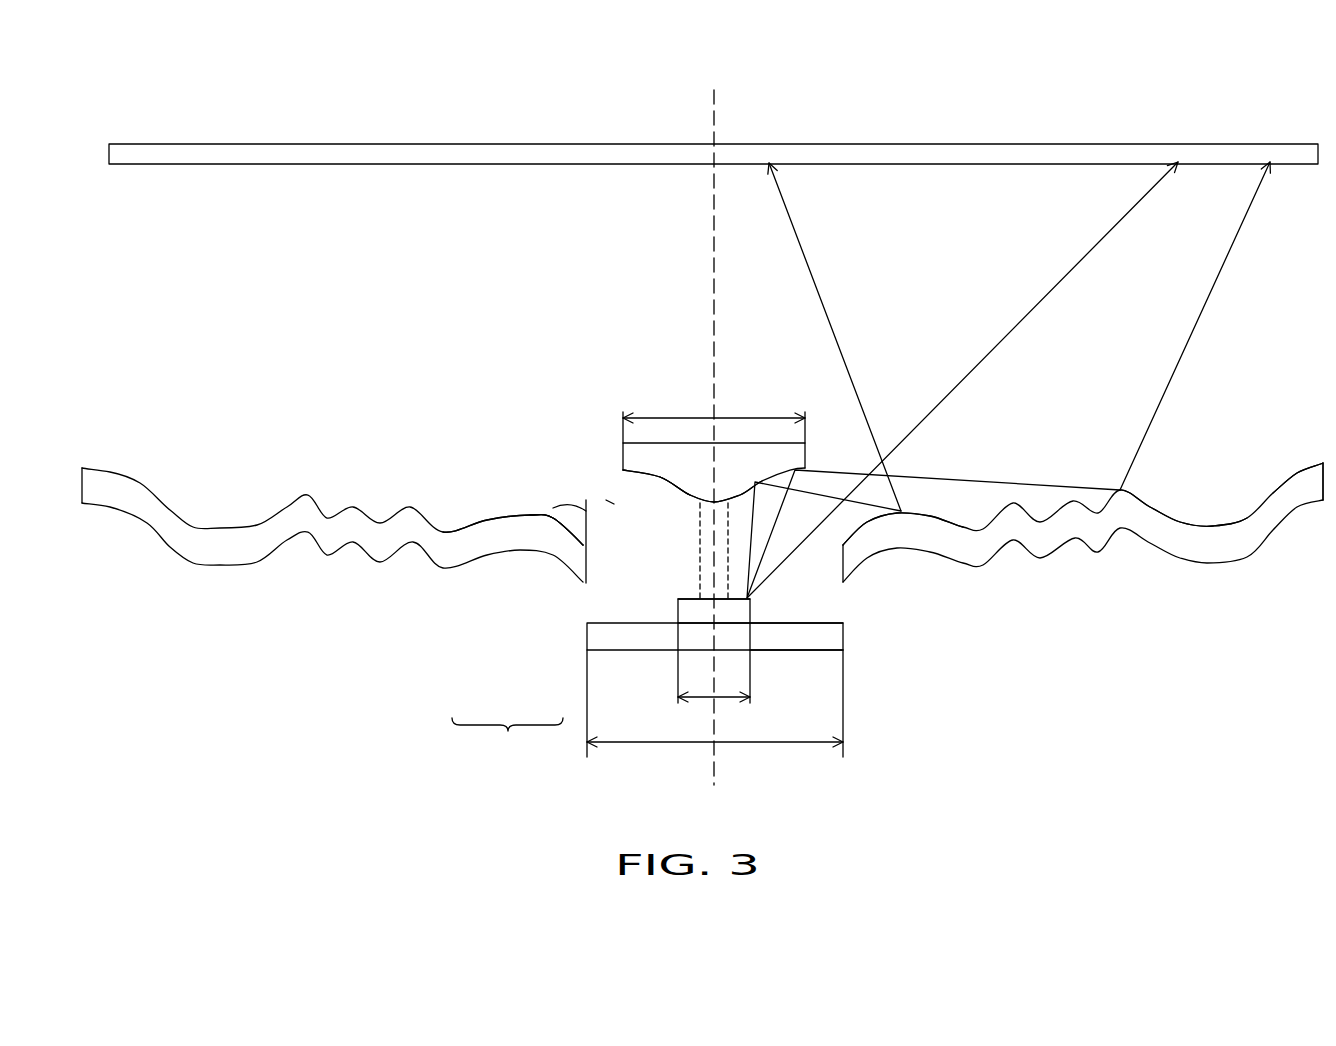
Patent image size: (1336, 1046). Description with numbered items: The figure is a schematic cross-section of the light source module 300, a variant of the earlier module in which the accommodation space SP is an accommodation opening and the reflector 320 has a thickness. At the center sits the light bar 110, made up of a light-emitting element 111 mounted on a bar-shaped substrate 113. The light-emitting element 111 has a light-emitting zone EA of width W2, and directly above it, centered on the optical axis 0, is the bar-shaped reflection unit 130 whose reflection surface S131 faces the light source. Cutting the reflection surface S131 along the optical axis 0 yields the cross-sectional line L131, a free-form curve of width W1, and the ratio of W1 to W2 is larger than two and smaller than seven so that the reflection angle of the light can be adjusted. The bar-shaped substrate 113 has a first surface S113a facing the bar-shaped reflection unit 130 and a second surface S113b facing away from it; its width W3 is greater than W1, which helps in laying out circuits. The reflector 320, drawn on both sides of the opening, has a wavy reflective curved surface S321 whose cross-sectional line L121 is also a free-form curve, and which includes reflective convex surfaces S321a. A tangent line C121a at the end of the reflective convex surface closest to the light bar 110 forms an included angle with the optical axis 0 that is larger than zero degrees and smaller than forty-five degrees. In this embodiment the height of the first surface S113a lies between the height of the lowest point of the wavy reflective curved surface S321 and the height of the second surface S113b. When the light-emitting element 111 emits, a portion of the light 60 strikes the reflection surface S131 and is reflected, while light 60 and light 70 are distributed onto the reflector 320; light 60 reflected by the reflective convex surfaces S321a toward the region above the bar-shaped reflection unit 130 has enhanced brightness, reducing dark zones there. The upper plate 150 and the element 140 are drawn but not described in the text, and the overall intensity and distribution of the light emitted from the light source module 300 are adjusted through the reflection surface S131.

The light guide plate / diffusion plate 150 is at (205, 152).
The optical axis 0 is at (713, 110).
The light 60 is at (811, 276).
The light 70 is at (1072, 268).
The bar-shaped reflection unit 130 is at (648, 456).
The cross-sectional line L131 is at (654, 474).
The reflection surface S131 is at (658, 478).
The accommodation space SP is at (610, 501).
The width of the cross-sectional line W1 is at (714, 411).
The reflector 320 is at (1221, 552).
The reflective convex surfaces S321a is at (516, 511).
The tangent line C121a is at (520, 515).
The wavy reflective curved surface S321 is at (1171, 518).
The cross-sectional line L121 is at (1298, 468).
The light emitting region 140 is at (698, 563).
The light-emitting elements 111 is at (687, 614).
The light-emitting zone EA is at (684, 594).
The bar-shaped substrate 113 is at (593, 636).
The light bar 110 is at (507, 742).
The first surface S113a is at (813, 621).
The second surface S113b is at (810, 652).
The width of the light-emitting zone W2 is at (714, 663).
The width of the bar-shaped substrate W3 is at (715, 703).
The light source module 300 is at (1262, 814).